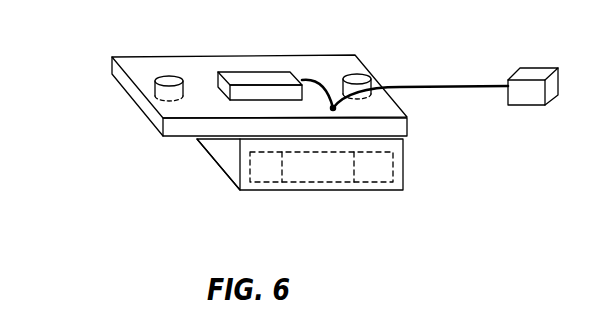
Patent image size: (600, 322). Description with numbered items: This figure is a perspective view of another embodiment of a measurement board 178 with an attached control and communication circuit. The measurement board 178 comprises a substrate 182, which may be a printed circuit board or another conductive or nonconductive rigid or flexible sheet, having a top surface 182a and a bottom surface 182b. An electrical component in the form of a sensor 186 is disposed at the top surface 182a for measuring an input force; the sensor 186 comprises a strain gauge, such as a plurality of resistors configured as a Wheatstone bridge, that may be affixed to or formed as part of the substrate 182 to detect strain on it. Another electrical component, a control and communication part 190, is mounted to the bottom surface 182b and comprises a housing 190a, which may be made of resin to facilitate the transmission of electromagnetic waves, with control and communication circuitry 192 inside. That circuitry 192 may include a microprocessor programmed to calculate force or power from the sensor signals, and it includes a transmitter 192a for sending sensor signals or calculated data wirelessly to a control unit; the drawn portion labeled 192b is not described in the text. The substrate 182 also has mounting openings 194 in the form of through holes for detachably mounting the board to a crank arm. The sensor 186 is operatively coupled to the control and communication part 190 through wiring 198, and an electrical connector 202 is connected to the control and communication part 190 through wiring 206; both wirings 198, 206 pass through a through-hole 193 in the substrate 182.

The measurement board 178 is at (102, 50).
The substrate 182 is at (207, 72).
The top surface 182a is at (182, 65).
The bottom surface 182b is at (152, 125).
The sensor 186 is at (255, 72).
The wiring 198 is at (312, 78).
The mounting openings 194 is at (154, 80).
The through-hole 193 is at (336, 110).
The wiring 206 is at (423, 88).
The electrical connector 202 is at (533, 107).
The control and communication part 190 is at (225, 197).
The housing 190a is at (217, 150).
The control and communication circuitry 192 is at (323, 172).
The transmitter 192a is at (388, 186).
The left battery cell 192b is at (240, 166).